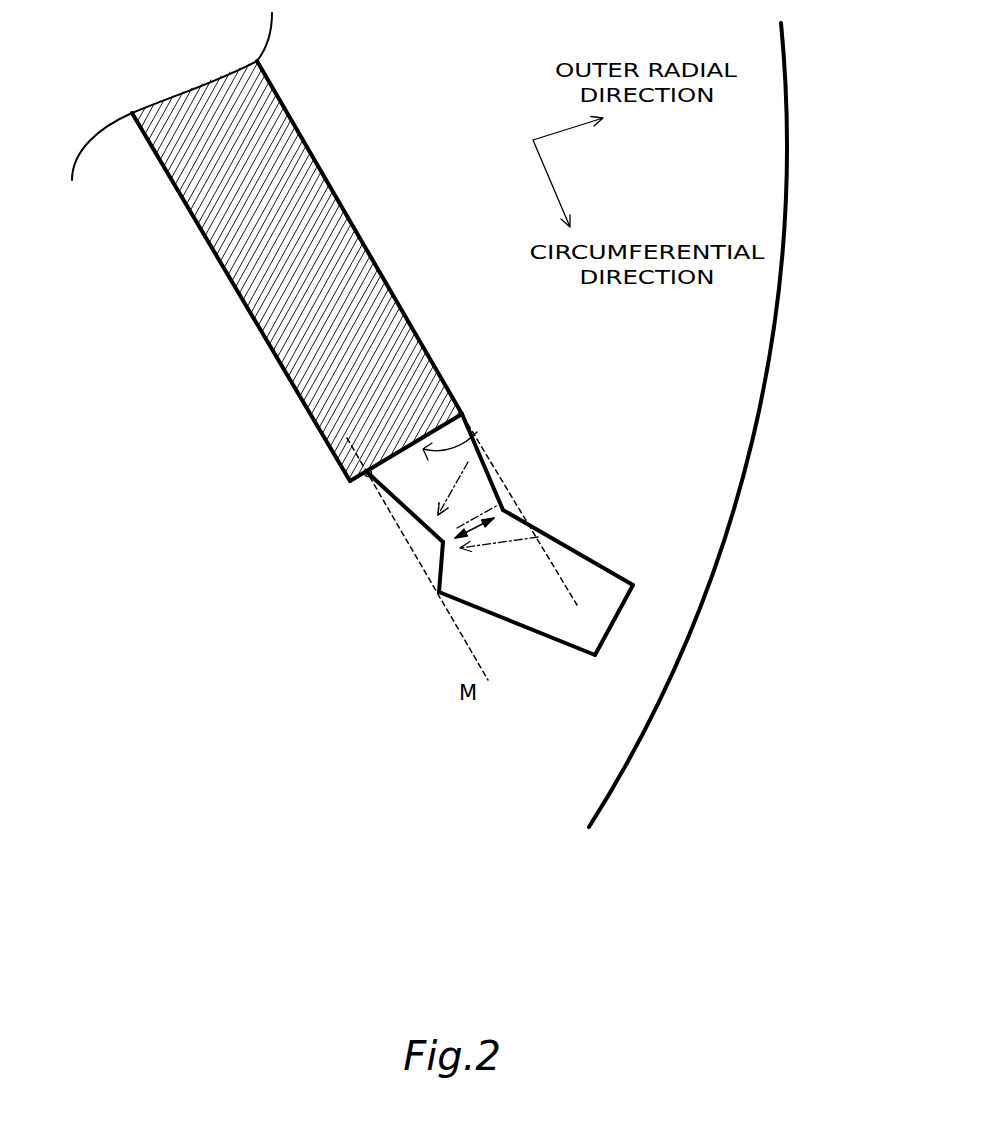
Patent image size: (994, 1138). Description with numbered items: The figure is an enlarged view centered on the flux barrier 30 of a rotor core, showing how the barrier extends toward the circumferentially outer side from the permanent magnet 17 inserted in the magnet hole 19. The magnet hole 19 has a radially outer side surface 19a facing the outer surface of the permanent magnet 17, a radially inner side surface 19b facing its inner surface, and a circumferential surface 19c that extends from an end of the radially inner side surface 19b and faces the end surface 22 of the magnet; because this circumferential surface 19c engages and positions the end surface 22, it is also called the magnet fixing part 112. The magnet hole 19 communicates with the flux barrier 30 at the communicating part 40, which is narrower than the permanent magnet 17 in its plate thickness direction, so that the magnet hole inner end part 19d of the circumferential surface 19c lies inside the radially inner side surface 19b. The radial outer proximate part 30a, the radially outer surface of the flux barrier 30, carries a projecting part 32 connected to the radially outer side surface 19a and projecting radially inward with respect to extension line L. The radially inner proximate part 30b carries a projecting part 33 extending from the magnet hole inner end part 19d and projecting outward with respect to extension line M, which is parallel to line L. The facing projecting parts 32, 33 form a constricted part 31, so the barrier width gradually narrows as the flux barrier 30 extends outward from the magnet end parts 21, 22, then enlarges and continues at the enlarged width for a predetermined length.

The permanent magnet 17 is at (300, 182).
The magnet hole 19 is at (307, 271).
The radially outer side surface 19a is at (347, 207).
The radially inner side surface 19b is at (222, 270).
The circumferential surface 19c is at (317, 525).
The magnet hole inner end part 19d is at (373, 493).
The magnet end part 21 is at (445, 377).
The end surface 22 is at (352, 460).
The flux barrier 30 is at (536, 546).
The radial outer proximate part 30a is at (538, 528).
The radially inner proximate part 30b is at (473, 608).
The constricted part 31 is at (482, 533).
The projecting part 32 is at (508, 493).
The projecting part 33 is at (430, 562).
The communicating part 40 is at (477, 432).
The magnet fixing part 112 is at (360, 490).